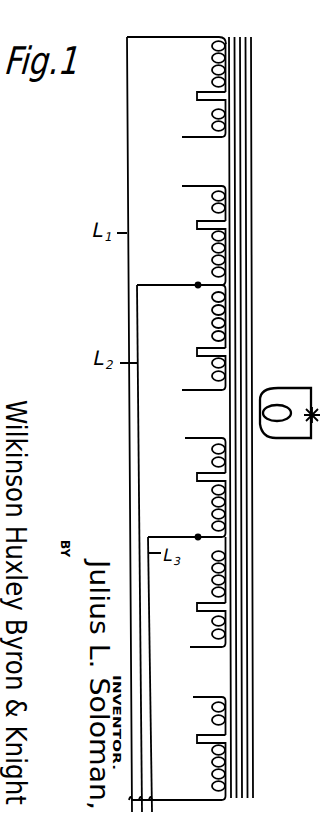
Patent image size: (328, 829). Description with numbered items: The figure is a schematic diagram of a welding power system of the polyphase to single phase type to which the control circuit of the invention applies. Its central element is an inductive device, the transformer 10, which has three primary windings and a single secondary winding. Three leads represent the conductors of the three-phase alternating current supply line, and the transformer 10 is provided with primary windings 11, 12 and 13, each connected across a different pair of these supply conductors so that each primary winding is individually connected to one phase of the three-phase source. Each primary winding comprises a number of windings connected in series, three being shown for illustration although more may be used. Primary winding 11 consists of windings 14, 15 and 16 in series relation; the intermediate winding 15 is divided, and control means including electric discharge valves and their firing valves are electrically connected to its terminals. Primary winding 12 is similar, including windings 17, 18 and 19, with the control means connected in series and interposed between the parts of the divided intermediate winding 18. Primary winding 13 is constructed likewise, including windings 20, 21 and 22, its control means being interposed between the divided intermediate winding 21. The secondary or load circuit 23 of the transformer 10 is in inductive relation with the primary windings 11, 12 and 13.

The transformer 10 is at (253, 285).
The primary winding 11 is at (182, 258).
The primary winding 12 is at (183, 302).
The primary winding 13 is at (185, 782).
The winding 14 is at (223, 61).
The intermediate winding 15 is at (225, 200).
The winding 16 is at (225, 248).
The winding 17 is at (225, 320).
The intermediate winding 18 is at (225, 460).
The winding 19 is at (225, 507).
The winding 20 is at (225, 585).
The intermediate winding 21 is at (225, 630).
The winding 22 is at (225, 757).
The secondary or load circuit 23 is at (287, 387).